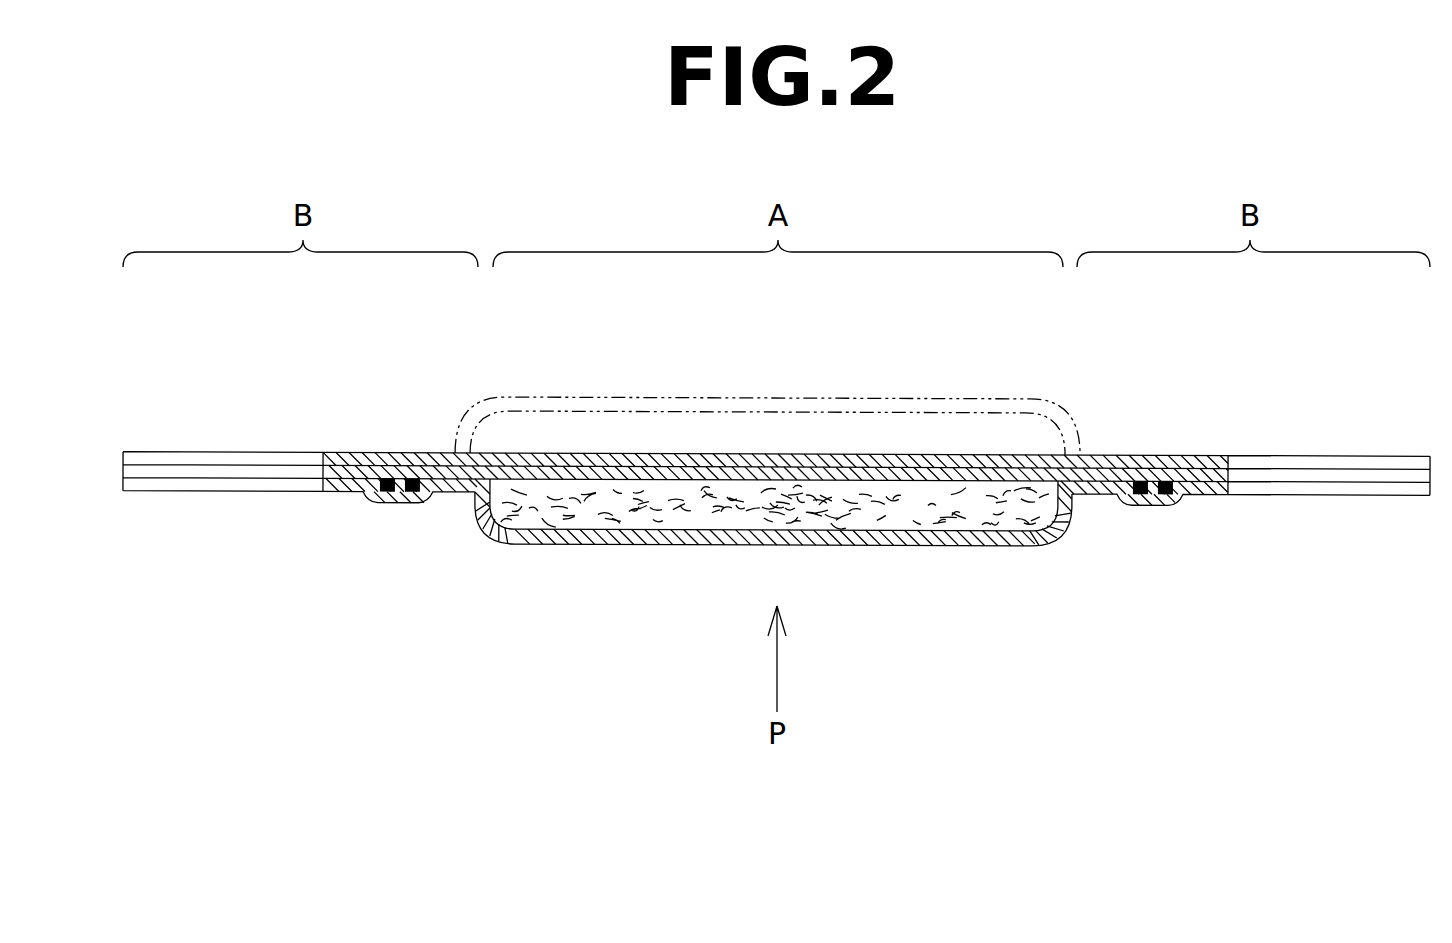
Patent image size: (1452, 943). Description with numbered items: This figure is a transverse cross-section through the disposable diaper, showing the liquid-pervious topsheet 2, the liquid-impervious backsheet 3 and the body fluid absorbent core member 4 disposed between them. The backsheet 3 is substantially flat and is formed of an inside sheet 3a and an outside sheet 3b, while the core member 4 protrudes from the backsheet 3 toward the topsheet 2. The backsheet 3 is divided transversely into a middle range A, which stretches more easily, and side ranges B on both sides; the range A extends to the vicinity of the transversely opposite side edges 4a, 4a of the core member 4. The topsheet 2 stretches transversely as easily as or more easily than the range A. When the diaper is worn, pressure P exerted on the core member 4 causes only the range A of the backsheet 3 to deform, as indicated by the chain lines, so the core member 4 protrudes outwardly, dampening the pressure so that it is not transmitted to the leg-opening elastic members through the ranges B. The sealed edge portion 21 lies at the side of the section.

The topsheet 2 is at (578, 536).
The sealed edge portion of outer bag 21 is at (1141, 458).
The backsheet 3 is at (505, 353).
The inside sheet 3a is at (447, 454).
The outside sheet 3b is at (383, 454).
The body fluid absorbent core member 4 is at (880, 452).
The side edge of core member 4a is at (497, 524).